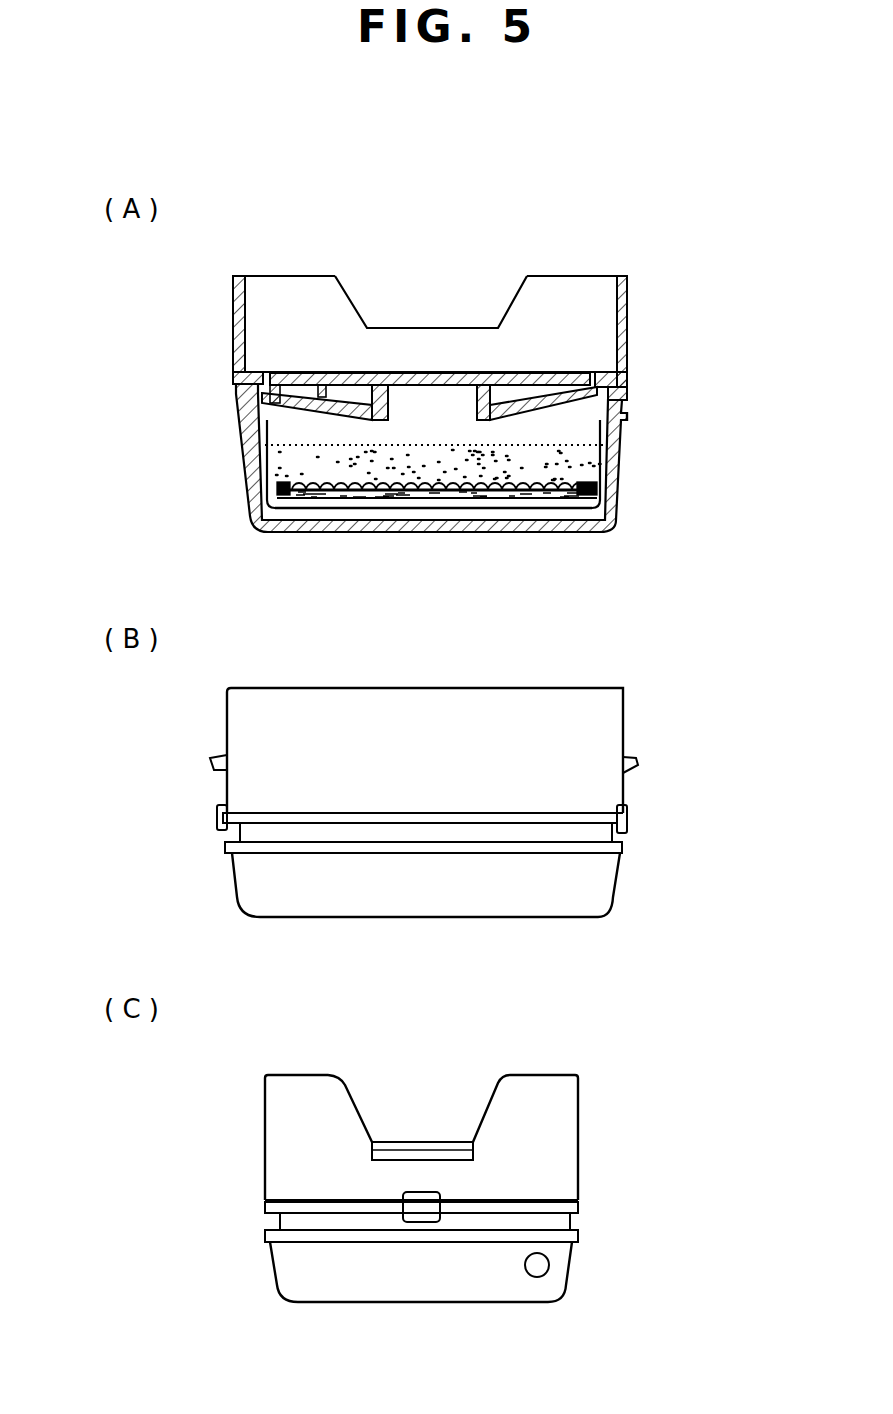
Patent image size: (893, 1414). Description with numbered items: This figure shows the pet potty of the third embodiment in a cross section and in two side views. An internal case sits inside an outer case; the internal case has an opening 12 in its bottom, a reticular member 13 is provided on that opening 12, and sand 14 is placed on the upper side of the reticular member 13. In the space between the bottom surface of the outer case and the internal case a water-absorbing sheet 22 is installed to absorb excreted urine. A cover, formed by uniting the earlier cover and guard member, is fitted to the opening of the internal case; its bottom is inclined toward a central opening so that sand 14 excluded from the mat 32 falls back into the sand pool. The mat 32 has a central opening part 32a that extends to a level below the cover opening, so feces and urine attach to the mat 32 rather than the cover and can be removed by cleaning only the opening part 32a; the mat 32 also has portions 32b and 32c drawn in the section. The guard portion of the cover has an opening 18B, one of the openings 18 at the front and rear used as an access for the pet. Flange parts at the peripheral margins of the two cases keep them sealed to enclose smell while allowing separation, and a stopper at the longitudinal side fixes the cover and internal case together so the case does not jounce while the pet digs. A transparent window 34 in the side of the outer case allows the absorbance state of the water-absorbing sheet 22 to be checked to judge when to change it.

The opening 12 is at (307, 490).
The reticular member 13 is at (548, 483).
The sand 14 is at (267, 462).
The openings 18 is at (352, 1095).
The opening 18B is at (352, 298).
The water-absorbing sheet 22 is at (583, 508).
The mat 32 is at (557, 373).
The central opening part 32a is at (380, 390).
The steam member leg 32b is at (325, 372).
The steam member plate 32c is at (300, 415).
The transparent window 34 is at (547, 1267).